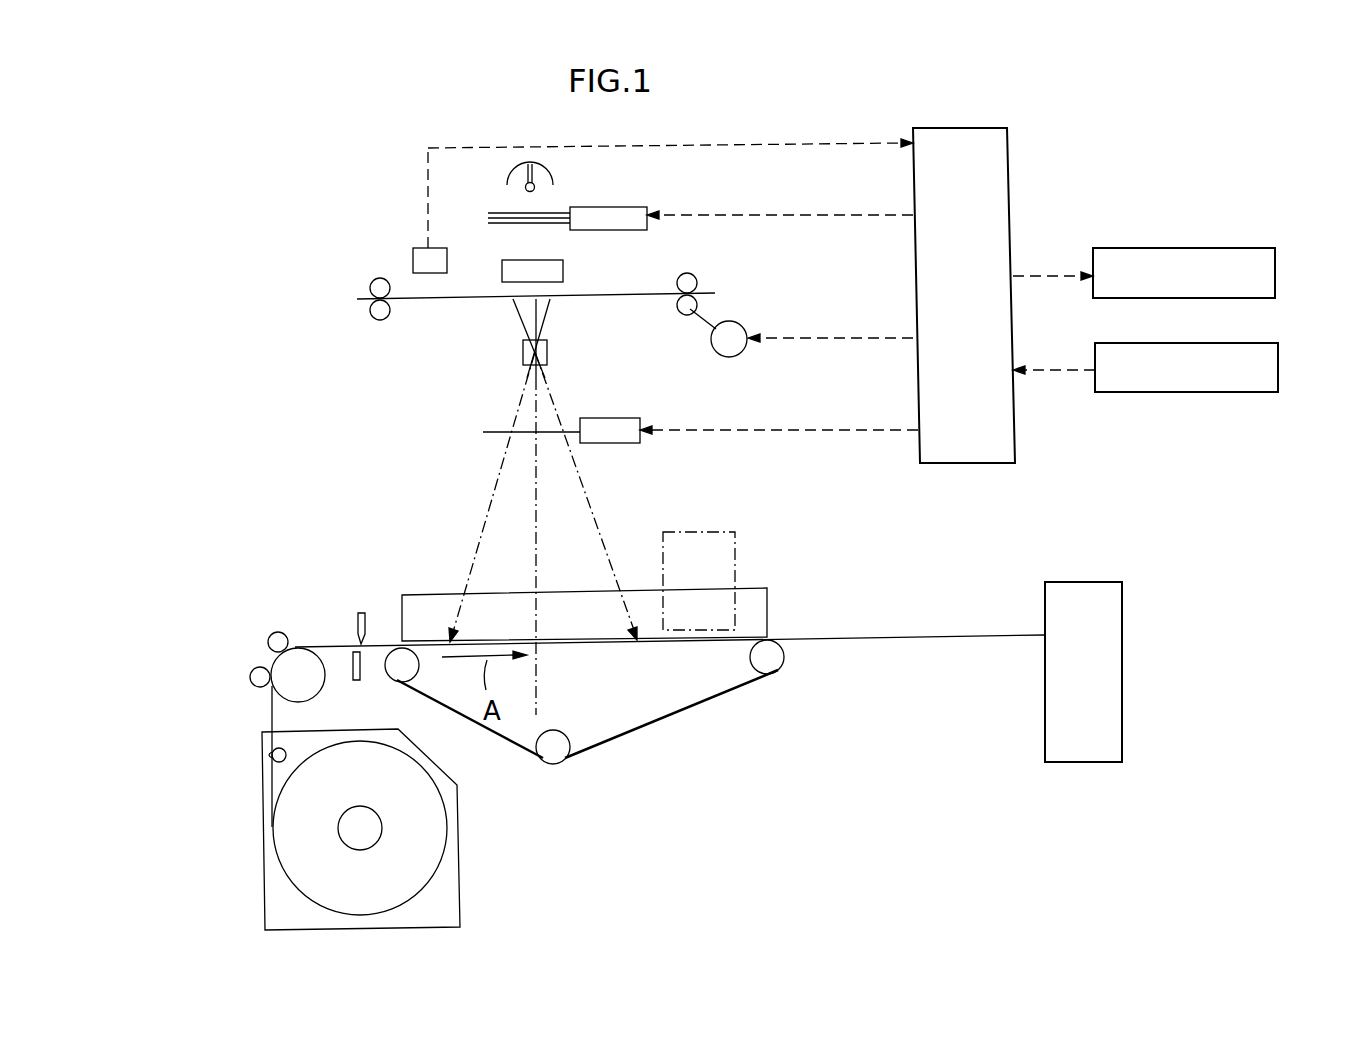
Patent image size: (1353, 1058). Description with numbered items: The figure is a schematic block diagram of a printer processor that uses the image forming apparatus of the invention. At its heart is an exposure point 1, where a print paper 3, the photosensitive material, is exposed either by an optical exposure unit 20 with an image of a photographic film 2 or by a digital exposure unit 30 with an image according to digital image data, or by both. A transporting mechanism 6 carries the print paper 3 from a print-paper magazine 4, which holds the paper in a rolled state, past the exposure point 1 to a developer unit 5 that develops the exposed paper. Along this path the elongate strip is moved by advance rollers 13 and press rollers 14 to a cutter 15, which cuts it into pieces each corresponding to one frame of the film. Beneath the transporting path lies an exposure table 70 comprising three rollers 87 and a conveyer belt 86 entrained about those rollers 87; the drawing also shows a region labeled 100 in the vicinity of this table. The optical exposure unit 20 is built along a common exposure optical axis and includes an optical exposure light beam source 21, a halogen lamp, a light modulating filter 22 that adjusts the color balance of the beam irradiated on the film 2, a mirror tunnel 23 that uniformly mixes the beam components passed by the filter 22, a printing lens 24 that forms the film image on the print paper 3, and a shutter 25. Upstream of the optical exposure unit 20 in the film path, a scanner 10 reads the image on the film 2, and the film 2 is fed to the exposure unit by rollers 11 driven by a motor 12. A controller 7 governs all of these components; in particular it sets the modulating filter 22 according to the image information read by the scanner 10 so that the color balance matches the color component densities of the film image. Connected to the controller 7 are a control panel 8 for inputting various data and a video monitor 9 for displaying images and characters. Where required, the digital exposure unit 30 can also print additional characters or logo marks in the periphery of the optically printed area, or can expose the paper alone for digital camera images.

The exposure point 1 is at (497, 577).
The photographic film 2 is at (443, 300).
The print paper 3 is at (270, 717).
The print-paper magazine 4 is at (458, 853).
The developer unit 5 is at (1080, 582).
The transporting mechanism 6 is at (290, 590).
The controller 7 is at (1008, 160).
The control panel 8 is at (1278, 367).
The video monitor 9 is at (1217, 248).
The scanner 10 is at (413, 252).
The rollers 11 is at (371, 306).
The motor 12 is at (730, 357).
The advance rollers 13 is at (296, 647).
The press rollers 14 is at (252, 670).
The cutter 15 is at (365, 611).
The optical exposure unit 20 is at (438, 400).
The optical exposure light beam source 21 is at (507, 180).
The light modulating filter 22 is at (630, 205).
The mirror tunnel 23 is at (563, 268).
The printing lens 24 is at (547, 352).
The shutter 25 is at (598, 445).
The digital exposure unit 30 is at (733, 530).
The exposure table 70 is at (703, 722).
The conveyer belt 86 is at (652, 727).
The rollers 87 is at (400, 668).
The exposure stage 100 is at (762, 572).